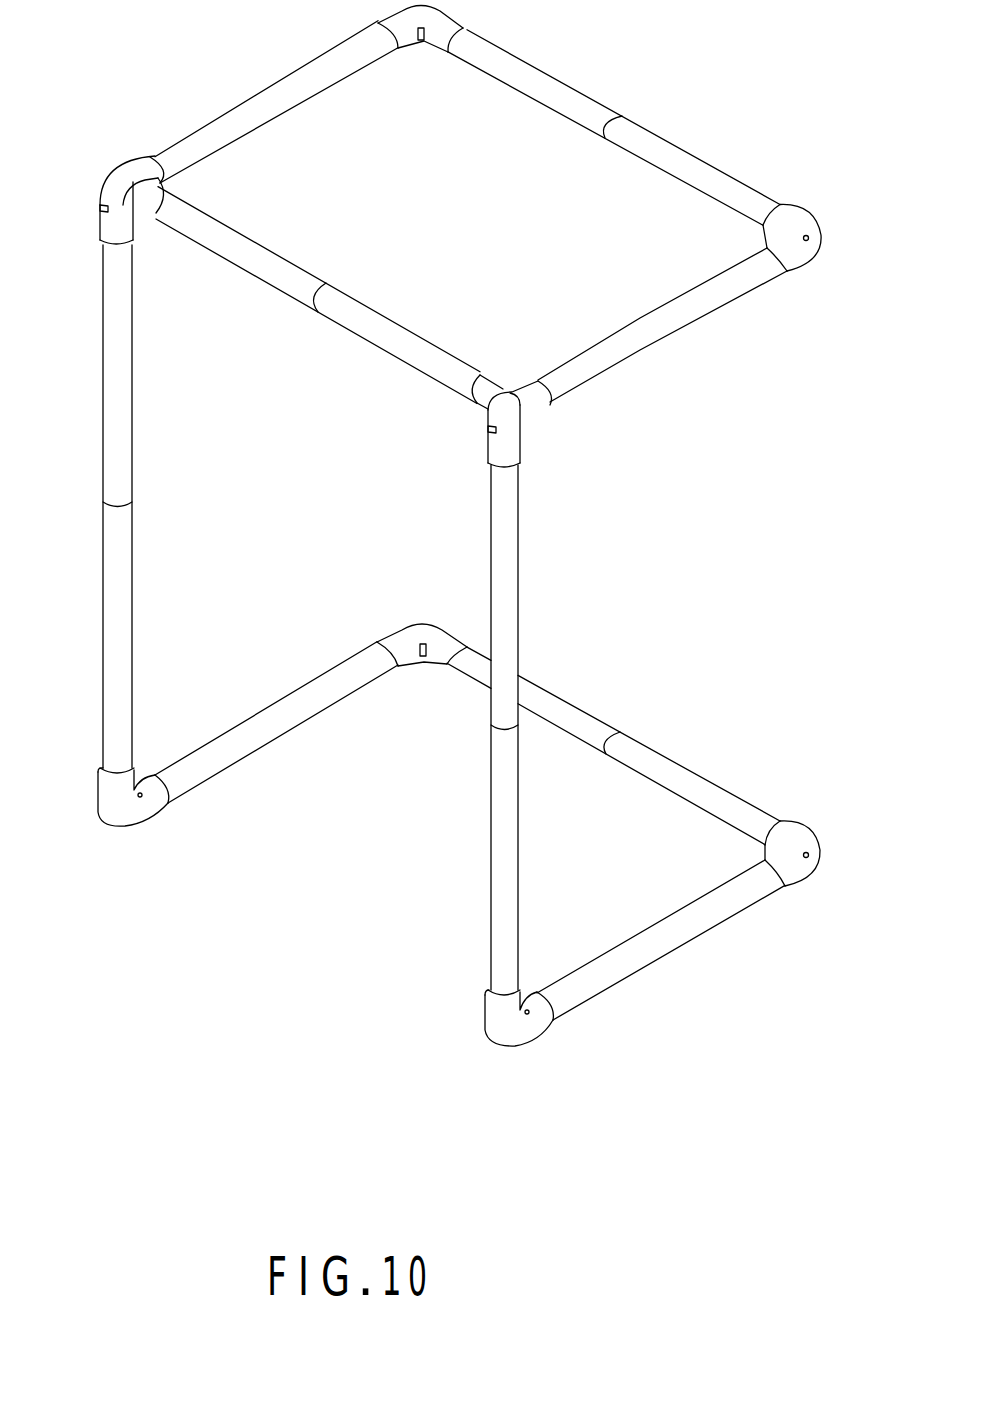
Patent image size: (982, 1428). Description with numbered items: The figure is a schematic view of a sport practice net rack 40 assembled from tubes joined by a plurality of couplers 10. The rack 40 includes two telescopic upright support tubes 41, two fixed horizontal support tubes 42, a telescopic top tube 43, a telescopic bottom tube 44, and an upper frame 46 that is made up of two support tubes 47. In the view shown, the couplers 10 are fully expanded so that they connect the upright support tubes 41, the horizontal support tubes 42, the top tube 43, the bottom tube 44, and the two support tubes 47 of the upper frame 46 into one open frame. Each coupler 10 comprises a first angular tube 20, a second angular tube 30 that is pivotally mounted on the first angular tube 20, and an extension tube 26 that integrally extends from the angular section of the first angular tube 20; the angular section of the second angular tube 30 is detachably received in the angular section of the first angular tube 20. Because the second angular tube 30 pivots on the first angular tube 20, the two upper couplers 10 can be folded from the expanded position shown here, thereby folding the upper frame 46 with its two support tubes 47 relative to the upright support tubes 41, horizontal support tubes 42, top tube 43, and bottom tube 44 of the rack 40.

The coupler 10 is at (105, 164).
The first angular tube 20 is at (100, 222).
The extension tube 26 is at (140, 212).
The second angular tube 30 is at (140, 156).
The sport practice net rack 40 is at (713, 573).
The telescopic upright support tubes 41 is at (125, 628).
The fixed horizontal support tubes 42 is at (269, 722).
The telescopic top tube 43 is at (290, 277).
The telescopic bottom tube 44 is at (695, 778).
The upper frame 46 is at (588, 80).
The support tubes 47 is at (257, 105).